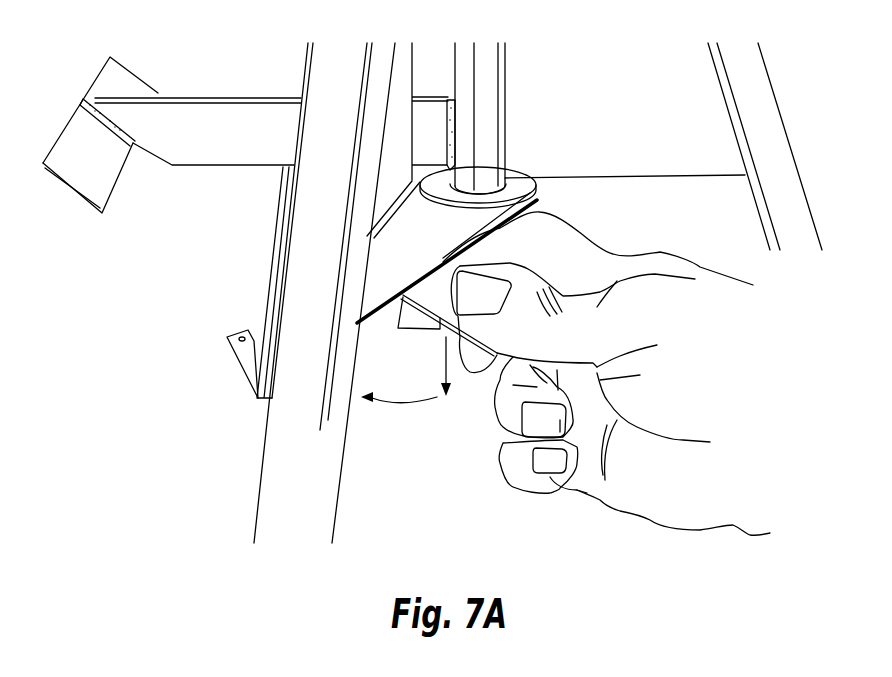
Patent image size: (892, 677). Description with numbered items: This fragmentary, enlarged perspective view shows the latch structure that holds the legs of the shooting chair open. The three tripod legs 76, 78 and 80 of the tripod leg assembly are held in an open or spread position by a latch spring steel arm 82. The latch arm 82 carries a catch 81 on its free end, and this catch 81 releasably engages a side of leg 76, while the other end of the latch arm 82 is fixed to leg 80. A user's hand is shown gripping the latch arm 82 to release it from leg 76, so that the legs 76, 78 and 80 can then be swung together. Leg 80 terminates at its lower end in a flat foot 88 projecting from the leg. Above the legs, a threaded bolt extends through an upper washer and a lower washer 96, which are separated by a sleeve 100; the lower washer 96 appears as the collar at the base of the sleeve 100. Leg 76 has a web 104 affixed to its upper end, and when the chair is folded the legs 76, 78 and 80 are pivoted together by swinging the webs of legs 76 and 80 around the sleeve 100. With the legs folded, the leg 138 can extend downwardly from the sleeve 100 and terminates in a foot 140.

The tripod leg 76 is at (758, 92).
The tripod leg 78 is at (280, 468).
The tripod leg 80 is at (272, 273).
The catch 81 is at (432, 288).
The latch spring steel arm 82 is at (413, 323).
The flat foot 88 is at (237, 350).
The lower washer 96 is at (530, 188).
The sleeve 100 is at (483, 114).
The web 104 is at (674, 98).
The leg 138 is at (217, 108).
The foot 140 is at (77, 132).